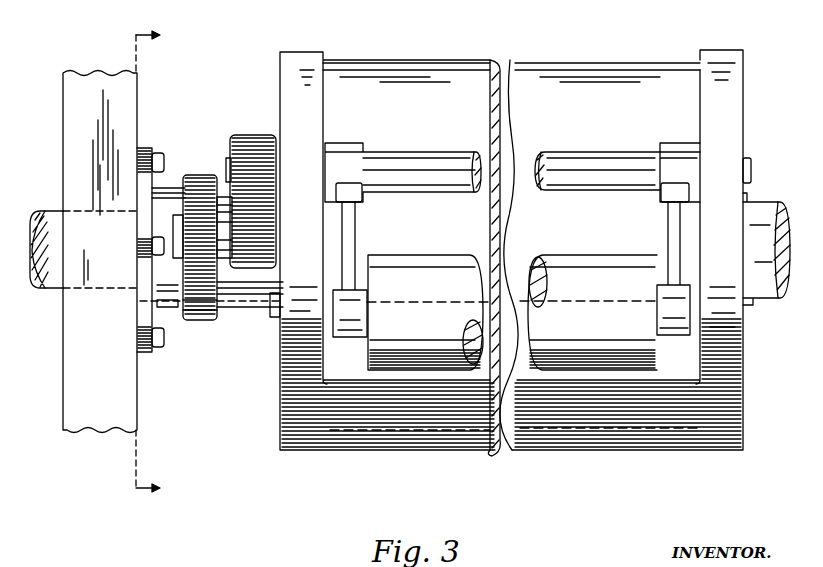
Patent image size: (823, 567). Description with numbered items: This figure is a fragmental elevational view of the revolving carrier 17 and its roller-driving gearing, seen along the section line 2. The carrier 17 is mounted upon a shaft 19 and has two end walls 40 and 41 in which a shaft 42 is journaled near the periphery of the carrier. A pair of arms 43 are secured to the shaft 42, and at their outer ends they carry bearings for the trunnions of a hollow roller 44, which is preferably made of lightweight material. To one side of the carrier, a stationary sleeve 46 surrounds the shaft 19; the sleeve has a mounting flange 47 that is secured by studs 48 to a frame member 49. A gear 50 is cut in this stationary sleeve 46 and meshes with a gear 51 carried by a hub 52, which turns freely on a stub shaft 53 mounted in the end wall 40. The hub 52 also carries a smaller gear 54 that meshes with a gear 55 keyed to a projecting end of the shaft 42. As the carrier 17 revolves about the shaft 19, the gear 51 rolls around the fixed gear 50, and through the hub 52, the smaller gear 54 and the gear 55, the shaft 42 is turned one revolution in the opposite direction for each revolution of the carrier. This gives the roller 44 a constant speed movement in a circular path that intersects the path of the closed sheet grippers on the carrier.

The section line 2- 2 is at (156, 261).
The revolving carrier 17 is at (590, 67).
The shaft 19 is at (757, 213).
The end wall 40 is at (297, 65).
The end wall 41 is at (735, 78).
The shaft 42 is at (552, 160).
The arms 43 is at (675, 232).
The hollow roller 44 is at (548, 262).
The sleeve 46 is at (163, 305).
The mounting flange 47 is at (148, 350).
The studs 48 is at (157, 250).
The frame member 49 is at (83, 418).
The gear 50 is at (200, 318).
The gear 51 is at (192, 185).
The hub 52 is at (220, 260).
The stub shaft 53 is at (173, 240).
The smaller gear 54 is at (260, 268).
The gear 55 is at (245, 142).